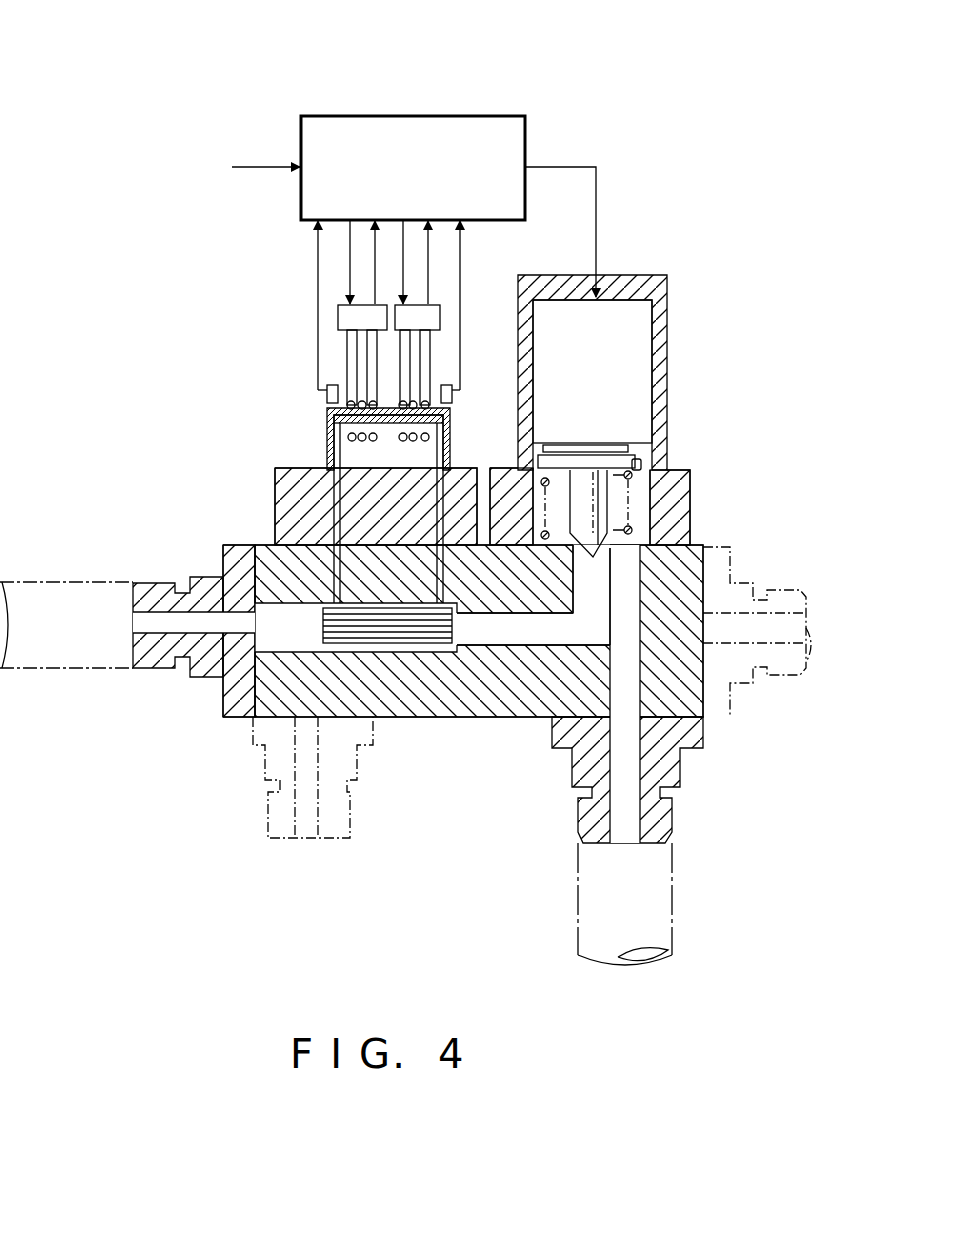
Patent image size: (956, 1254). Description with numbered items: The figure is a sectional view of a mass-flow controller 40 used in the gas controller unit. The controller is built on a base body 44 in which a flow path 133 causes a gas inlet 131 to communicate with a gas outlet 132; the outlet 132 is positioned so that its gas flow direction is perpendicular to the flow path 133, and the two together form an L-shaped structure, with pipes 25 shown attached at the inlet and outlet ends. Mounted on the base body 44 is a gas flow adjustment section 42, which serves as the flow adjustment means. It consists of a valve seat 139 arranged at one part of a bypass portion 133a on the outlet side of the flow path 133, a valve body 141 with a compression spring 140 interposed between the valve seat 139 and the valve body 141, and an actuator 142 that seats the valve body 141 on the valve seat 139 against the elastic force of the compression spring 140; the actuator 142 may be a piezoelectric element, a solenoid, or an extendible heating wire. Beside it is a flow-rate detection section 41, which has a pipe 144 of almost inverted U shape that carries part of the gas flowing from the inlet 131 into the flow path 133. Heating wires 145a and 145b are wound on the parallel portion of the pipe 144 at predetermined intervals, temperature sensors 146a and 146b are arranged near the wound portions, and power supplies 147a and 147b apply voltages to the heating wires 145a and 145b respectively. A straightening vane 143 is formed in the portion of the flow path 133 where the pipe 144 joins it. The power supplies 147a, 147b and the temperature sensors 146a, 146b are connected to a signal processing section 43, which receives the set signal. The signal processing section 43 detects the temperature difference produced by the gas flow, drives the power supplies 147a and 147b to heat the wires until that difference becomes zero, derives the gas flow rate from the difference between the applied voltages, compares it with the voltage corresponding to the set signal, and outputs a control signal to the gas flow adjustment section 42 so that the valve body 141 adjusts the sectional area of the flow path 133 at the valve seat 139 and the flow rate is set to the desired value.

The pipe 25 is at (86, 657).
The mass-flow controller 40 is at (604, 157).
The flow-rate detection section 41 is at (267, 367).
The gas flow adjustment section 42 is at (685, 361).
The signal processing section 43 is at (410, 116).
The base body 44 is at (408, 723).
The gas inlet 131 is at (212, 618).
The gas outlet 132 is at (627, 818).
The flow path 133 is at (512, 628).
The bypass portion 133a is at (585, 588).
The valve seat 139 is at (634, 542).
The compression spring 140 is at (608, 478).
The valve body 141 is at (612, 503).
The actuator 142 is at (632, 340).
The straightening vane 143 is at (428, 650).
The pipe 144 is at (330, 459).
The heating wire 145a is at (347, 360).
The heating wire 145b is at (430, 364).
The temperature sensor 146a is at (327, 398).
The temperature sensor 146b is at (452, 397).
The power supply 147a is at (338, 310).
The power supply 147b is at (440, 312).